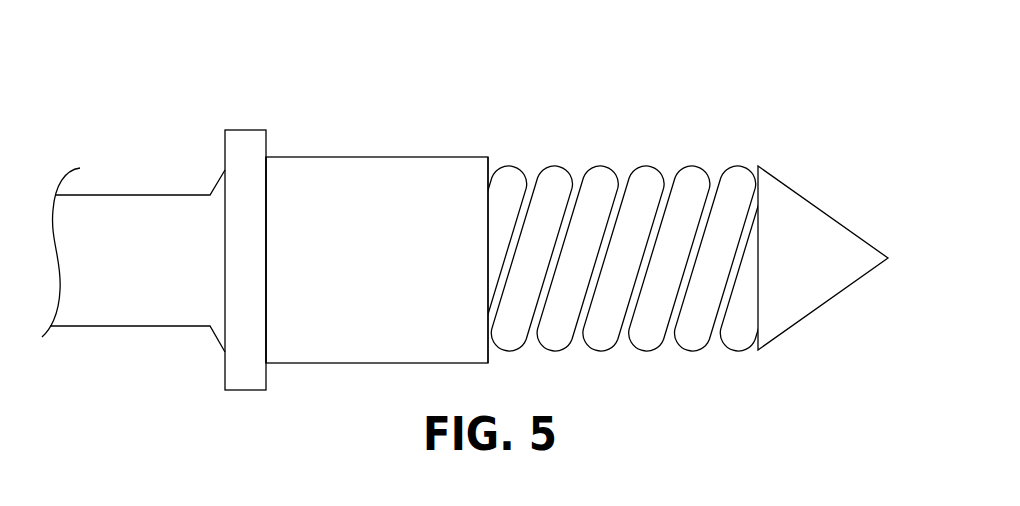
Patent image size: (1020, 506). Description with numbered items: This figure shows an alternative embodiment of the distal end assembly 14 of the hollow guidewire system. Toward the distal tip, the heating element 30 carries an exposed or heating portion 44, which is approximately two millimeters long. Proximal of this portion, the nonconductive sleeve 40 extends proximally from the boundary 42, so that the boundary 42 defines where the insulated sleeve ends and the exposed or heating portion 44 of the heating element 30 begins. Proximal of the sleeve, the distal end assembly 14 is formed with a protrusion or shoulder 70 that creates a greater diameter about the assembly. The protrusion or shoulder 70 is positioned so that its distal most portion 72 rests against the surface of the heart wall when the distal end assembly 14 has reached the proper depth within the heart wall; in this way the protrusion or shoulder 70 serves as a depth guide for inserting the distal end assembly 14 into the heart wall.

The distal end assembly 14 is at (452, 102).
The heating element 30 is at (705, 398).
The nonconductive sleeve 40 is at (377, 260).
The boundary 42 is at (487, 240).
The exposed or heating portion 44 is at (752, 143).
The protrusion or shoulder 70 is at (238, 157).
The distal most portion 72 is at (265, 278).